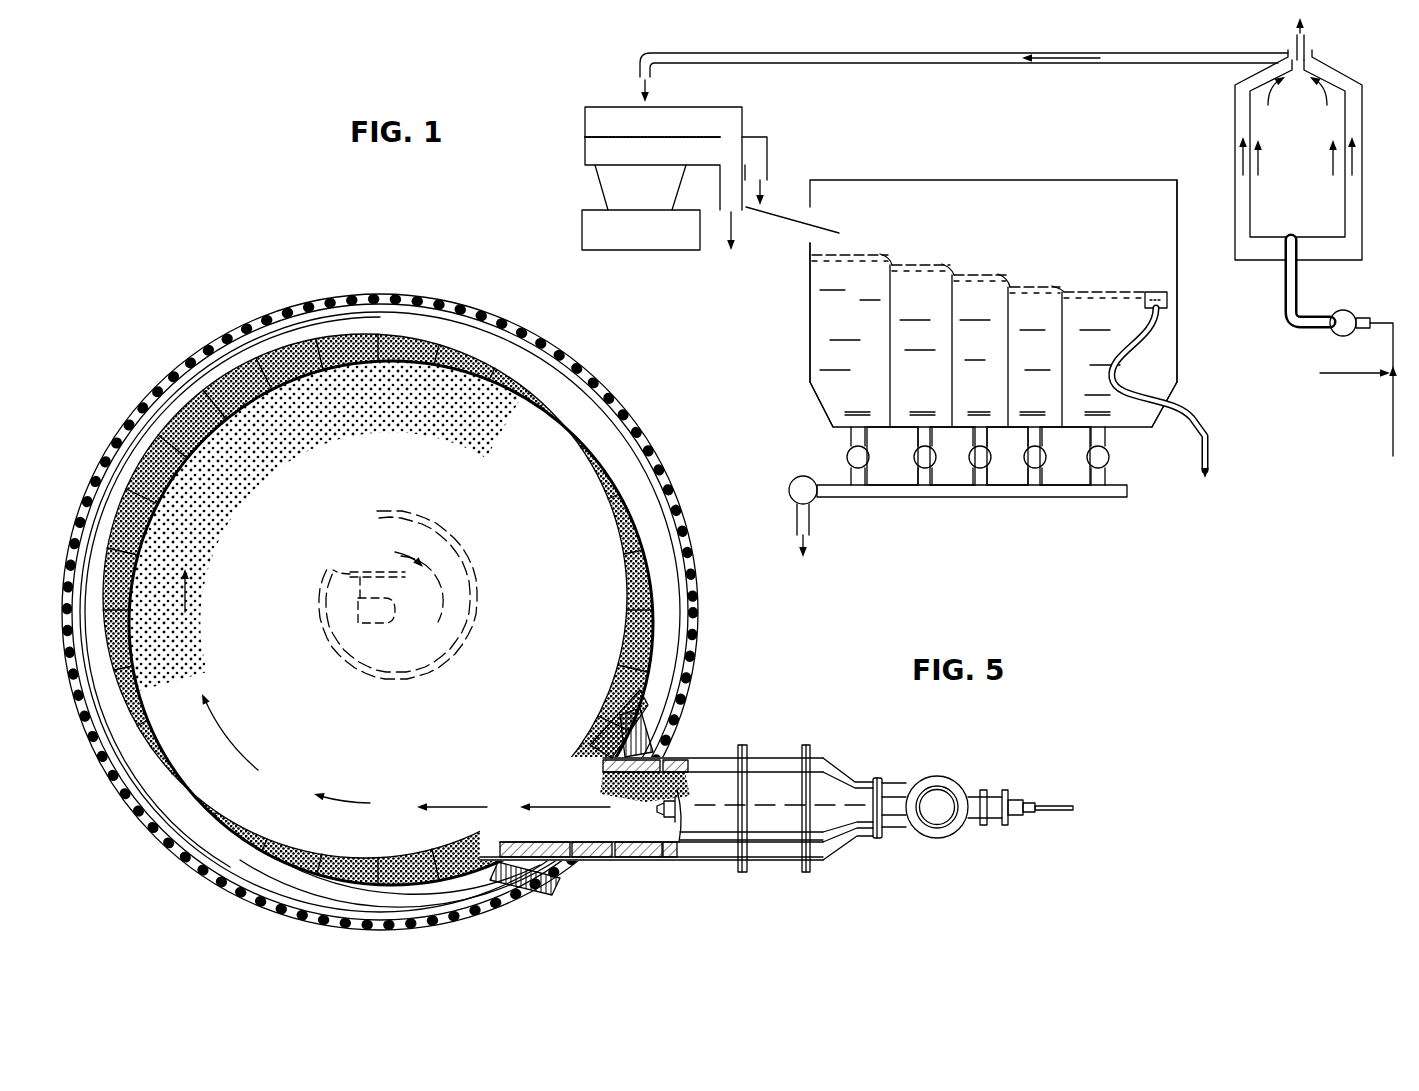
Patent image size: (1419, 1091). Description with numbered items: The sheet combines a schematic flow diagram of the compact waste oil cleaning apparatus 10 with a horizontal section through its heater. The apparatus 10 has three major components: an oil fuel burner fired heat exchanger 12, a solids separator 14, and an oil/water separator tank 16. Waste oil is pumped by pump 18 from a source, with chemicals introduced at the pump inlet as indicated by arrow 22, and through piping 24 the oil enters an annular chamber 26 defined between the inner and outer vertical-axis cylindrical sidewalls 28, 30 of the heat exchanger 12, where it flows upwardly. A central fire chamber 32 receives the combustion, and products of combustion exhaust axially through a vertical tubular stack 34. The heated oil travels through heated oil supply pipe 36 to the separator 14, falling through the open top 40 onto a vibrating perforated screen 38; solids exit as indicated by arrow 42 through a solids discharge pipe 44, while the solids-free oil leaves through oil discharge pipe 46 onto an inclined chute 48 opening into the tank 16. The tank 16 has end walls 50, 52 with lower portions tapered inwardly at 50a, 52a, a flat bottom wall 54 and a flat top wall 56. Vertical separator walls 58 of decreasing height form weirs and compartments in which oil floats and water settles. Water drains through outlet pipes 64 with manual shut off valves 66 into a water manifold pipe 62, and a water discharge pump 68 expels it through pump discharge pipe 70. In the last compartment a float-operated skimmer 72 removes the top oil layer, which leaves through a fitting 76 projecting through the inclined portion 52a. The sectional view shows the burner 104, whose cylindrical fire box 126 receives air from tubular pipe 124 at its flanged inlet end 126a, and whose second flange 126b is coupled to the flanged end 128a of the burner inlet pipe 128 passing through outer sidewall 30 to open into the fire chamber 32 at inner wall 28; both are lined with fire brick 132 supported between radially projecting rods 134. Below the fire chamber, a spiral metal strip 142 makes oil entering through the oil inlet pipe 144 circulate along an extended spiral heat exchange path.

In FIG. 1, the compact waste oil cleaning apparatus 10 is at (1080, 512).
In FIG. 1, the heat exchanger 12 is at (1289, 253).
In FIG. 1, the solids separator 14 is at (674, 179).
In FIG. 1, the oil/water separator tank 16 is at (989, 370).
In FIG. 1, the pump 18 is at (1343, 310).
In FIG. 1, the chemical introduction arrow 22 is at (1352, 372).
In FIG. 1, the piping 24 is at (1290, 330).
In FIG. 1, the annular chamber 26 is at (1362, 220).
In FIG. 5, the annular chamber 26 is at (622, 416).
In FIG. 1, the inner cylindrical sidewall 28 is at (1250, 203).
In FIG. 5, the inner cylindrical sidewall 28 is at (664, 472).
In FIG. 1, the outer cylindrical sidewall 30 is at (1235, 142).
In FIG. 5, the outer cylindrical sidewall 30 is at (690, 515).
In FIG. 1, the central fire chamber 32 is at (1286, 207).
In FIG. 5, the central fire chamber 32 is at (490, 661).
In FIG. 1, the vertical tubular stack 34 is at (1312, 48).
In FIG. 1, the heated oil supply pipe 36 is at (1002, 53).
In FIG. 1, the vibrating perforated screen 38 is at (676, 136).
In FIG. 1, the open top 40 is at (735, 106).
In FIG. 1, the solids exit arrow 42 is at (734, 237).
In FIG. 1, the solids discharge pipe 44 is at (723, 190).
In FIG. 1, the oil discharge pipe 46 is at (768, 166).
In FIG. 1, the inclined chute 48 is at (782, 216).
In FIG. 1, the upstream end wall 50 is at (809, 376).
In FIG. 1, the inclined portion of upstream end wall 50a is at (822, 406).
In FIG. 1, the downstream end wall 52 is at (1179, 333).
In FIG. 1, the inclined sidewall portion 52a is at (1157, 432).
In FIG. 1, the bottom wall 54 is at (897, 426).
In FIG. 1, the top wall 56 is at (927, 178).
In FIG. 1, the vertical separator walls 58 is at (889, 319).
In FIG. 1, the water manifold pipe 62 is at (1000, 497).
In FIG. 1, the outlet pipes 64 is at (935, 478).
In FIG. 1, the control shut off valves 66 is at (875, 478).
In FIG. 1, the water discharge pump 68 is at (789, 493).
In FIG. 1, the pump discharge pipe 70 is at (812, 520).
In FIG. 1, the skimmer 72 is at (1160, 292).
In FIG. 1, the fitting 76 is at (1182, 403).
In FIG. 5, the burner 104 is at (742, 745).
In FIG. 5, the tubular pipe 124 is at (948, 780).
In FIG. 5, the cylindrical fire box 126 is at (775, 862).
In FIG. 5, the flanged inlet end 126a is at (880, 778).
In FIG. 5, the second flange 126b is at (806, 746).
In FIG. 5, the burner inlet pipe 128 is at (690, 862).
In FIG. 5, the flanged end 128a is at (743, 872).
In FIG. 5, the fire brick 132 is at (302, 818).
In FIG. 5, the radially projecting rods 134 is at (676, 764).
In FIG. 5, the spiral metal strip 142 is at (455, 566).
In FIG. 5, the oil inlet pipe 144 is at (356, 570).